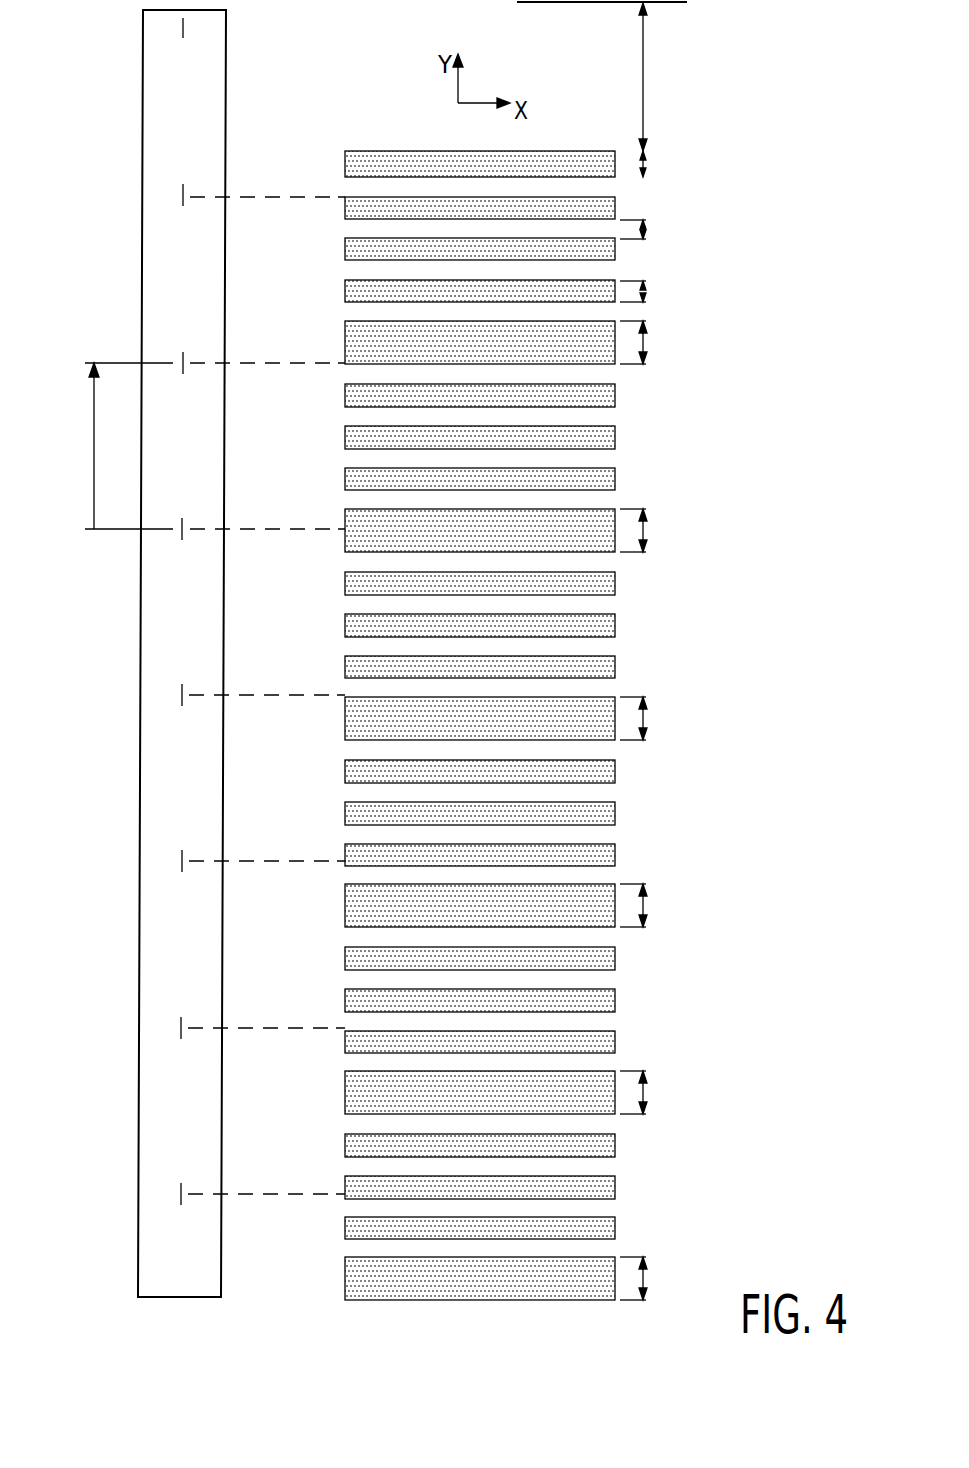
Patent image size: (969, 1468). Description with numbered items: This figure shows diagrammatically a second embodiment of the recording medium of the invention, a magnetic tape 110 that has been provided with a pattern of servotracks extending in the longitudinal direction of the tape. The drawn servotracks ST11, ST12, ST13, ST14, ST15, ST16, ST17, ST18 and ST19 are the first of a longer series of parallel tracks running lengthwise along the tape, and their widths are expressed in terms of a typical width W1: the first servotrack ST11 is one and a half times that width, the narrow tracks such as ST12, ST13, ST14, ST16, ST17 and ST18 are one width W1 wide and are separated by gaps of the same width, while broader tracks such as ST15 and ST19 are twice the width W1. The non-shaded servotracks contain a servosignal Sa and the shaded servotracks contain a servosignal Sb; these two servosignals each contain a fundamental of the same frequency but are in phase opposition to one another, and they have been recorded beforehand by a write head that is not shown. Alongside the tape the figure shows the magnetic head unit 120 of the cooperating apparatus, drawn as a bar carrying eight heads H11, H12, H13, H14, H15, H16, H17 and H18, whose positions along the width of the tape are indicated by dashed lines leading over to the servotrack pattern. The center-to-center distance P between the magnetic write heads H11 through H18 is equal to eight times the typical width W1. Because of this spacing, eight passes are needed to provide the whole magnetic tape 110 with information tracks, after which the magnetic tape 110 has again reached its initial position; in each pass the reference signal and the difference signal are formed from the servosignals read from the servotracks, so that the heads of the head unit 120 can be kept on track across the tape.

The magnetic tape 110 is at (70, 0).
The magnetic head unit 120 is at (143, 172).
The servotrack ST11 is at (480, 148).
The servotrack ST12 is at (448, 186).
The servotrack ST13 is at (421, 214).
The servotrack ST14 is at (448, 251).
The servotrack ST15 is at (421, 290).
The servotrack ST16 is at (448, 321).
The servotrack ST17 is at (421, 352).
The servotrack ST18 is at (448, 382).
The servotrack ST19 is at (421, 426).
The magnetic write head H11 is at (181, 61).
The magnetic write head H12 is at (252, 222).
The magnetic write head H13 is at (215, 387).
The magnetic write head H14 is at (215, 561).
The magnetic write head H15 is at (252, 722).
The magnetic write head H16 is at (252, 890).
The magnetic write head H17 is at (252, 1054).
The magnetic write head H18 is at (252, 1217).
The center-to-center distance P is at (78, 446).
The typical width W1 is at (645, 89).